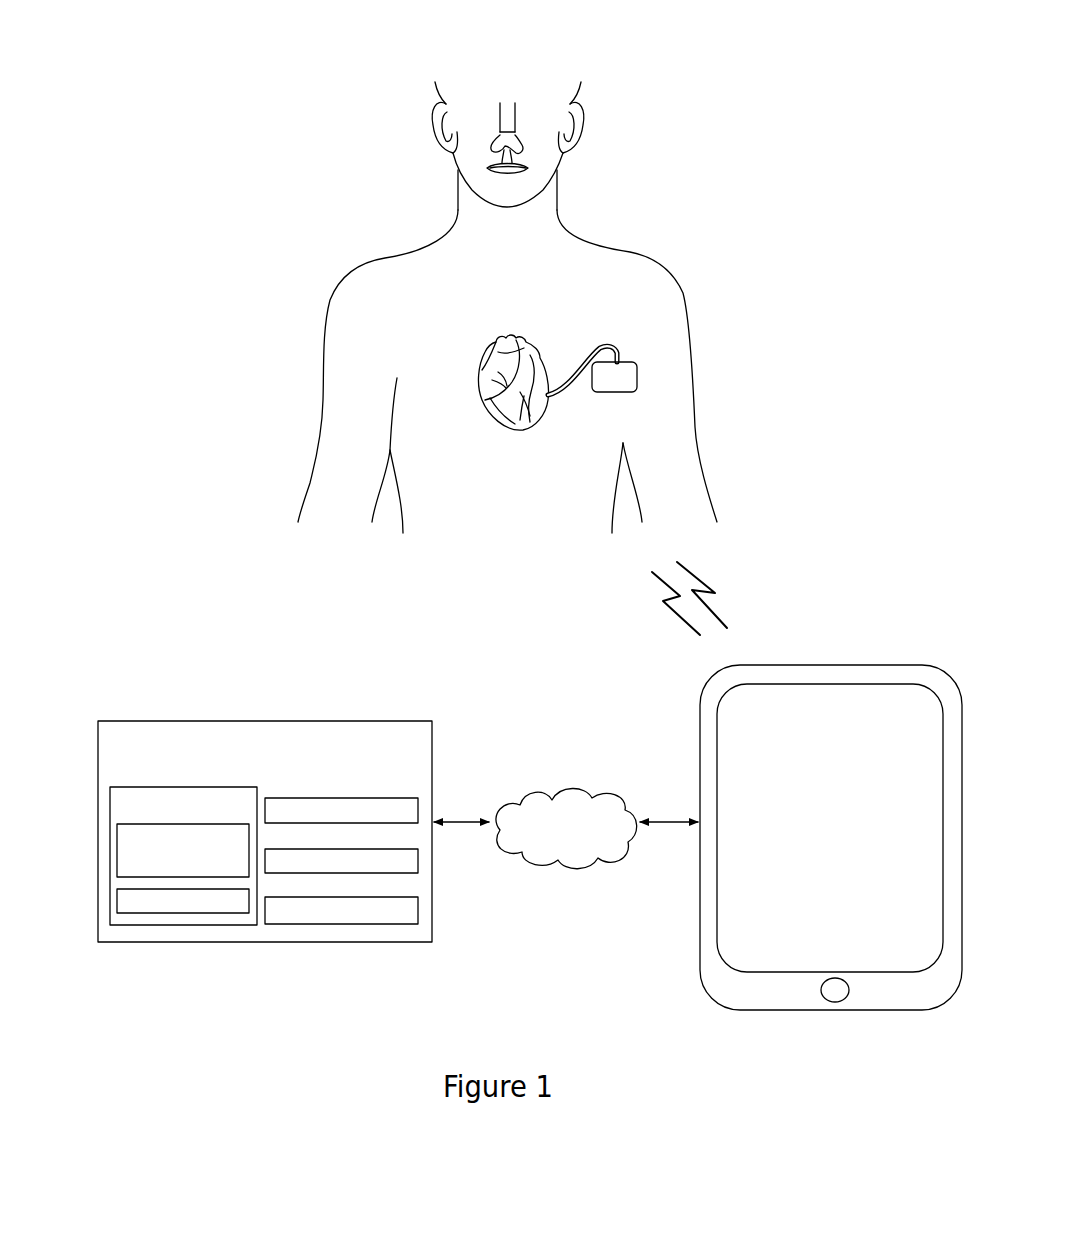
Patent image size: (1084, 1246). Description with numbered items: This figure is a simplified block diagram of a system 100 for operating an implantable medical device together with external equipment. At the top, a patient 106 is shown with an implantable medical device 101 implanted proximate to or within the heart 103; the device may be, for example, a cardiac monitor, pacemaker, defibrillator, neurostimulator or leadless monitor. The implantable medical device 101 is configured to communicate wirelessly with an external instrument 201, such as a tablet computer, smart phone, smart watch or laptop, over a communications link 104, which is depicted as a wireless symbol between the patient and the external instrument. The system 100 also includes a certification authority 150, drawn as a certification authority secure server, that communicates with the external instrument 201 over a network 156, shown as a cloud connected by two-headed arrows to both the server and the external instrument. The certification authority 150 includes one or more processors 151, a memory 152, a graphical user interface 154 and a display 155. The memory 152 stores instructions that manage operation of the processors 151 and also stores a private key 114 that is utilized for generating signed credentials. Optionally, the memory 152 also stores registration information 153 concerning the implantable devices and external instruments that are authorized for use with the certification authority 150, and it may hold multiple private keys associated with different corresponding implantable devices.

The system 100 is at (831, 157).
The patient 106 is at (630, 246).
The heart 103 is at (507, 426).
The implantable medical device 101 is at (620, 392).
The communications link 104 is at (723, 612).
The external instrument 201 is at (878, 665).
The certification authority 150 is at (392, 721).
The processors 151 is at (403, 798).
The memory 152 is at (110, 802).
The registration information 153 is at (117, 852).
The private key 114 is at (117, 903).
The display 155 is at (403, 873).
The graphical user interface 154 is at (403, 924).
The network 156 is at (602, 783).